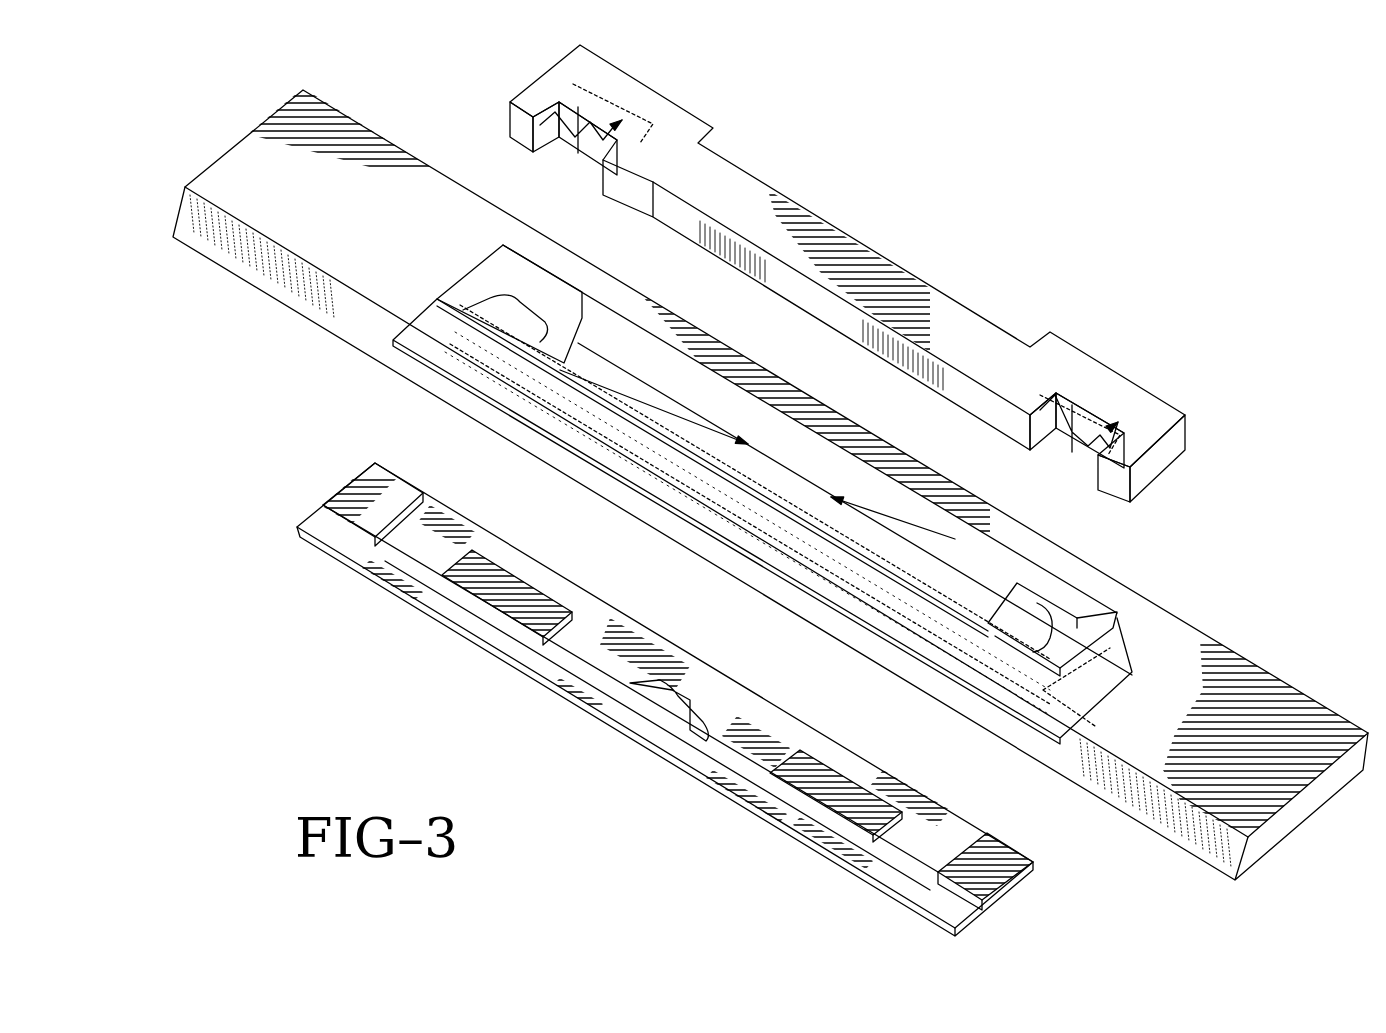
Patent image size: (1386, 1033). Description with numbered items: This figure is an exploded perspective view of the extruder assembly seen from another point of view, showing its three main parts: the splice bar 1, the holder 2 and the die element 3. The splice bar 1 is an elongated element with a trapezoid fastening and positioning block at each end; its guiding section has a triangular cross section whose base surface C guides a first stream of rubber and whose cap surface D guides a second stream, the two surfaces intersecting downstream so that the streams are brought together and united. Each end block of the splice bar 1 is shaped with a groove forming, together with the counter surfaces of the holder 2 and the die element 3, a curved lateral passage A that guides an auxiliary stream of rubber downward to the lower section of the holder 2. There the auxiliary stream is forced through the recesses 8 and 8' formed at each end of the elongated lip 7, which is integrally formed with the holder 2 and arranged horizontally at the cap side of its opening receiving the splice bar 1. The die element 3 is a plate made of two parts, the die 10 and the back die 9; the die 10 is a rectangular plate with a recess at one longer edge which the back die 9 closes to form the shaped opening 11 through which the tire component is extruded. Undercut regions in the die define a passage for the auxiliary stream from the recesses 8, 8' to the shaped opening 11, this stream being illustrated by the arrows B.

The splice bar 1 is at (847, 273).
The holder 2 is at (265, 187).
The die element 3 is at (654, 666).
The lip 7 is at (762, 463).
The recess 8 is at (509, 272).
The recess 8' is at (1052, 578).
The back die 9 is at (403, 602).
The die 10 is at (873, 775).
The shaped opening 11 is at (650, 700).
The lateral passage A is at (983, 207).
The arrows B is at (732, 610).
The base surface C is at (800, 287).
The cap surface D is at (815, 212).